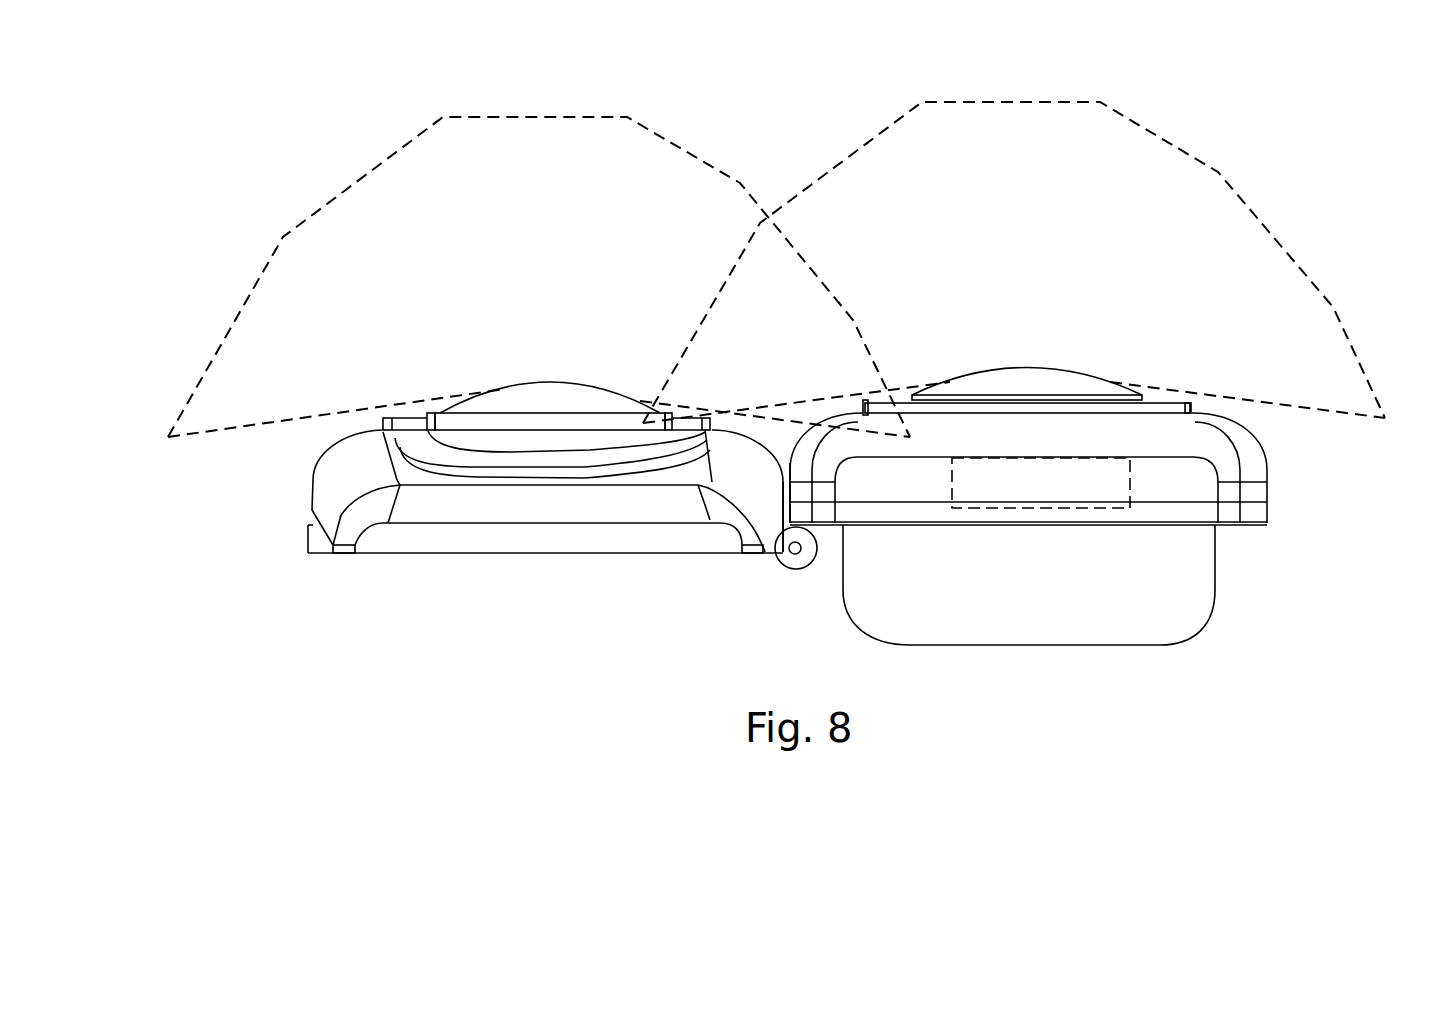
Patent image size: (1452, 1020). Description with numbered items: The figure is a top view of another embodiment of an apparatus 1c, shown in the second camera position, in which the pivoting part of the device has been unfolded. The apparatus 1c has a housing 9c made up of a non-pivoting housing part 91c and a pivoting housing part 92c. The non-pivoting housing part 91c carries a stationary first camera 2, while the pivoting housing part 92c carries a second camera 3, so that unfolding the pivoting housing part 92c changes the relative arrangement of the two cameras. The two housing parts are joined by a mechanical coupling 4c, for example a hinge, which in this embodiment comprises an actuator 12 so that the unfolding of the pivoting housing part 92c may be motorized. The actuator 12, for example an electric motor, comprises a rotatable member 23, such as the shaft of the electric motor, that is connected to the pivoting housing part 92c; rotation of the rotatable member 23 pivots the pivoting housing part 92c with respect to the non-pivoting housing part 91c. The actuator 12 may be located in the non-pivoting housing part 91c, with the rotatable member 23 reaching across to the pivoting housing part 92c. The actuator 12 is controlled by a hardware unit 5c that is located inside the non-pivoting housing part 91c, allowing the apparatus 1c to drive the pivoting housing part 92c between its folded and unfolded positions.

The apparatus 1c is at (348, 264).
The stationary first camera 2 is at (1072, 384).
The second camera 3 is at (506, 402).
The mechanical coupling 4c is at (771, 584).
The hardware unit 5c is at (1052, 495).
The housing 9c is at (708, 636).
The actuator 12 is at (810, 575).
The rotatable member 23 is at (795, 548).
The non-pivoting housing part 91c is at (1177, 500).
The pivoting housing part 92c is at (543, 487).